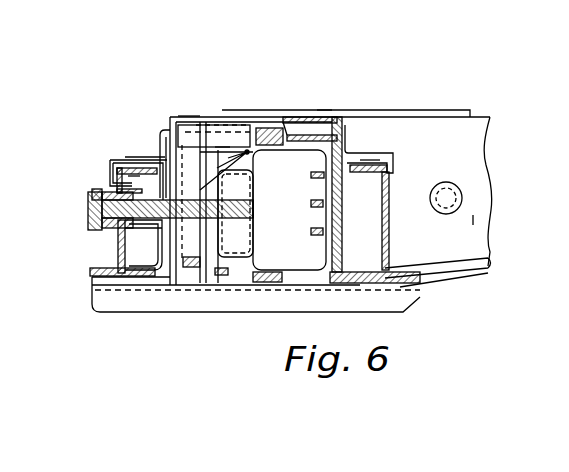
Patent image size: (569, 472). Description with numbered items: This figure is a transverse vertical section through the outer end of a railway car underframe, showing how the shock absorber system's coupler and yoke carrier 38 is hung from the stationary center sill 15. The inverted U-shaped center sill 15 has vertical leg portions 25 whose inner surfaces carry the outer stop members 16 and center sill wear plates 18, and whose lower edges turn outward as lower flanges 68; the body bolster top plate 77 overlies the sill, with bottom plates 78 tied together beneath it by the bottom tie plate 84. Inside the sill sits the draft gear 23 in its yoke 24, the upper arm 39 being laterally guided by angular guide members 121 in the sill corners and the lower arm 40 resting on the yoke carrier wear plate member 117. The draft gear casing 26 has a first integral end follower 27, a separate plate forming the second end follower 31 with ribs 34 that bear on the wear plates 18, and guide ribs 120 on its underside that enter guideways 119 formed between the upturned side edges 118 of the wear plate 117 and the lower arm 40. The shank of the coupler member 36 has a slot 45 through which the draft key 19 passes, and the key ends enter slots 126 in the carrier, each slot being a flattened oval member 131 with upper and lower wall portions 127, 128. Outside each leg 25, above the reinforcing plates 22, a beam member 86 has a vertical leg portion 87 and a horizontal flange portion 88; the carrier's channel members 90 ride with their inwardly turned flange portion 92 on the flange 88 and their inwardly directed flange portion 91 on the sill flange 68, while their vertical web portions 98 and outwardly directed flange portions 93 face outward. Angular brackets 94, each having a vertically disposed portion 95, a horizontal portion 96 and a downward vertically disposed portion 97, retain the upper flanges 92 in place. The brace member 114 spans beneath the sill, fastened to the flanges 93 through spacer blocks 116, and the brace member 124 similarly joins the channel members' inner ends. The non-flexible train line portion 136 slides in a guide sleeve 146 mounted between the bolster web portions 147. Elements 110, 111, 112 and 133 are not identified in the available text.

The center sill 15 is at (222, 110).
The outer stop members 16 is at (210, 147).
The center sill wear plates 18 is at (303, 240).
The draft key 19 is at (143, 233).
The reinforcing plates 22 is at (130, 246).
The draft gear 23 is at (247, 148).
The yoke 24 is at (284, 125).
The vertical leg portions 25 is at (166, 251).
The casing 26 is at (220, 146).
The first integral end follower 27 is at (265, 128).
The second end follower 31 is at (367, 152).
The ribs 34 is at (309, 173).
The coupler member 36 is at (230, 246).
The coupler carrier 38 is at (133, 313).
The upper arm 39 is at (277, 125).
The lower arm 40 is at (238, 297).
The slot 45 is at (255, 213).
The lower flanges 68 is at (128, 318).
The top plate 77 is at (473, 110).
The bottom plates 78 is at (482, 262).
The bottom tie plate 84 is at (470, 272).
The beam members 86 is at (110, 173).
The vertical leg portion 87 is at (158, 150).
The flange portion 88 is at (133, 157).
The channel members 90 is at (116, 239).
The inwardly directed flange portion 91 is at (137, 313).
The inwardly turned flange portion 92 is at (123, 154).
The outwardly directed flange portions 93 is at (93, 290).
The angular brackets 94 is at (152, 157).
The vertically disposed portion 95 is at (144, 147).
The horizontal portion 96 is at (128, 157).
The vertically disposed portion 97 is at (92, 190).
The vertical web portions 98 is at (113, 253).
The member 110 is at (198, 122).
The member 111 is at (178, 116).
The member 112 is at (182, 127).
The brace member 114 is at (92, 300).
The spacer blocks 116 is at (92, 292).
The yoke carrier wear plate member 117 is at (243, 313).
The upturned side edges 118 is at (190, 285).
The guideways 119 is at (233, 285).
The guide ribs 120 is at (199, 290).
The angular guide members 121 is at (317, 110).
The brace member 124 is at (332, 298).
The slots 126 is at (100, 212).
The upper wall portion 127 is at (100, 193).
The lower wall portion 128 is at (102, 234).
The flattened oval member 131 is at (138, 189).
The bolt head 133 is at (88, 204).
The non-flexible train line portion 136 is at (457, 198).
The guide sleeve 146 is at (460, 186).
The web portions 147 is at (473, 221).